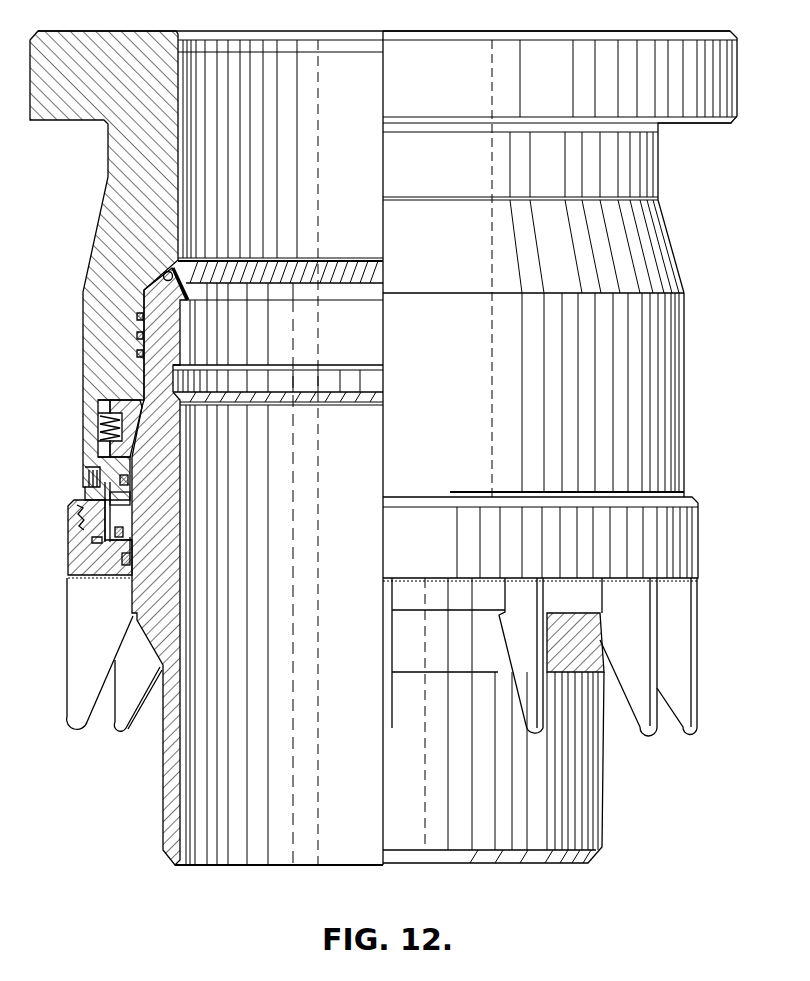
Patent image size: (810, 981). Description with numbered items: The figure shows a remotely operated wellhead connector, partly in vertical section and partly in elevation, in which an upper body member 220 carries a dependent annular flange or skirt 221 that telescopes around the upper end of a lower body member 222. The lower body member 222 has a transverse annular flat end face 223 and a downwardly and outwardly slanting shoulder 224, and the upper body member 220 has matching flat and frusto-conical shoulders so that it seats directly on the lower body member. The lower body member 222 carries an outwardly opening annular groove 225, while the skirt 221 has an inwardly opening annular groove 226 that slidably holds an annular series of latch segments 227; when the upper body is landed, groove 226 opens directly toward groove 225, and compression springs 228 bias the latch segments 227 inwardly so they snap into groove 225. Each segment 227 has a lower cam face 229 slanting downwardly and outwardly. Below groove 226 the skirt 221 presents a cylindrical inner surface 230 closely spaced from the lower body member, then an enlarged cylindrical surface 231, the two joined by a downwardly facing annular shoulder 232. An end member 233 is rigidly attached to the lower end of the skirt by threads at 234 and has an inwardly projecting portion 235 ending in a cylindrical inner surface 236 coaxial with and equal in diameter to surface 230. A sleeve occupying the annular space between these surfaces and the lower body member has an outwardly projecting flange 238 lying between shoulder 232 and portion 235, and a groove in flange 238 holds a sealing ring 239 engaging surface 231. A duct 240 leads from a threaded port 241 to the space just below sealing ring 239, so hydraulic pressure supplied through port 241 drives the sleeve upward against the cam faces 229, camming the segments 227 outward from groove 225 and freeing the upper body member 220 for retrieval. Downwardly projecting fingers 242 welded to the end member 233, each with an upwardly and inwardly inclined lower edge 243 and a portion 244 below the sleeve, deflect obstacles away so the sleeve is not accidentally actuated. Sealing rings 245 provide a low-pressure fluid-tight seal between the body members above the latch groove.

The upper body member 220 is at (103, 204).
The annular flange 221 is at (83, 378).
The lower body member 222 is at (324, 515).
The flat end face 223 is at (257, 563).
The slanting shoulder 224 is at (155, 285).
The annular groove 225 is at (278, 408).
The annular groove 226 is at (98, 405).
The latch segments 227 is at (112, 420).
The compression springs 228 is at (98, 442).
The lower cam face 229 is at (133, 434).
The cylindrical inner surface 230 is at (128, 478).
The cylindrical surface 231 is at (105, 512).
The annular shoulder 232 is at (130, 494).
The end member 233 is at (68, 555).
The threads 234 is at (78, 508).
The inwardly projecting portion 235 is at (120, 578).
The cylindrical inner surface 236 is at (120, 567).
The flange 238 is at (122, 540).
The sealing ring 239 is at (123, 531).
The duct 240 is at (105, 518).
The threaded port 241 is at (86, 476).
The fingers 242 is at (118, 723).
The inclined lower edge 243 is at (144, 690).
The finger portion 244 is at (136, 619).
The sealing rings 245 is at (143, 352).